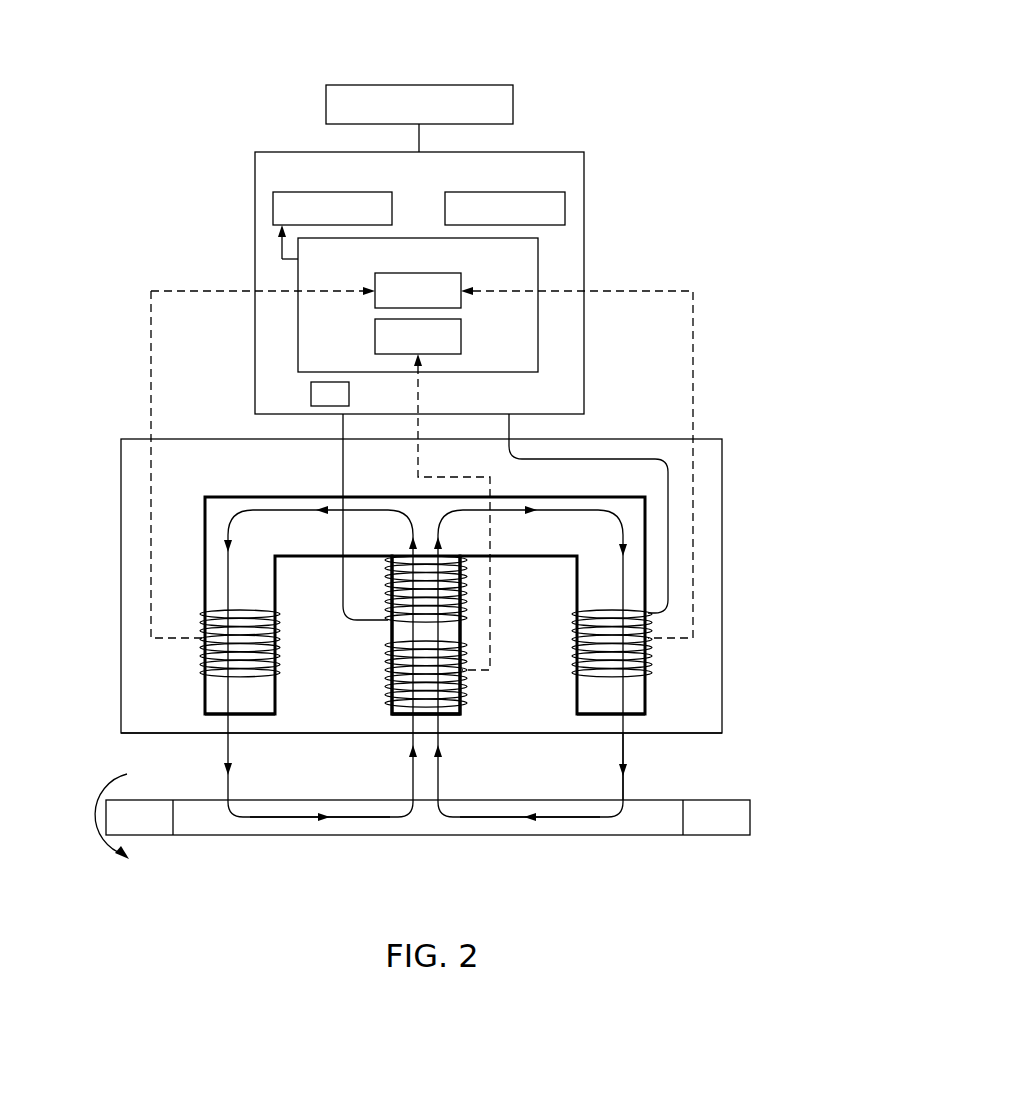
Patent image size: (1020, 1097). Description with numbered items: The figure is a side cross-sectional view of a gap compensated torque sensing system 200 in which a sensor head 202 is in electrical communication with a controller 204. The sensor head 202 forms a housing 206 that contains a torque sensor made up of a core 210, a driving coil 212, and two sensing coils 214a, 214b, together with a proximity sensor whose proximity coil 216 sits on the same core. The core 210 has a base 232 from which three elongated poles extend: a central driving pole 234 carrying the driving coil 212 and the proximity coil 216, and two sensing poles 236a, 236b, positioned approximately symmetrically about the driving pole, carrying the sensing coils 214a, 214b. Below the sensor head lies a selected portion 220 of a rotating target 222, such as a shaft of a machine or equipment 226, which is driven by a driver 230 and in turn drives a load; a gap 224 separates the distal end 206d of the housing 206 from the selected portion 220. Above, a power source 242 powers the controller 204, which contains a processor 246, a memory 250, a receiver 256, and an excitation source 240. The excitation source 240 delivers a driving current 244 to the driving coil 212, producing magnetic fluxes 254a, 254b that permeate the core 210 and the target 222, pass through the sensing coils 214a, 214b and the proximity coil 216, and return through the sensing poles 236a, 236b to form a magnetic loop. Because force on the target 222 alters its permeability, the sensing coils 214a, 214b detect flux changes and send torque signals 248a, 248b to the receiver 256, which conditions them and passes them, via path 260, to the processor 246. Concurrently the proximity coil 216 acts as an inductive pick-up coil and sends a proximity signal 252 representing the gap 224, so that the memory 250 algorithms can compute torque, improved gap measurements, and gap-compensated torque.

The gap compensated torque sensing system 200 is at (485, 47).
The sensor head 202 is at (110, 481).
The controller 204 is at (585, 168).
The housing 206 is at (722, 568).
The distal end of the housing 206d is at (730, 731).
The core 210 is at (538, 492).
The driving coil 212 is at (392, 628).
The first sensing coil 214a is at (201, 666).
The second sensing coil 214b is at (652, 664).
The proximity coil 216 is at (385, 670).
The selected portion of the target 220 is at (428, 826).
The target 222 is at (571, 800).
The gap 224 is at (642, 770).
The machine or equipment 226 is at (75, 794).
The driver 230 is at (152, 838).
The base 232 is at (270, 545).
The driving pole 234 is at (450, 717).
The first sensing pole 236a is at (207, 720).
The second sensing pole 236b is at (646, 714).
The excitation source 240 is at (311, 392).
The power source 242 is at (513, 104).
The driving current 244 is at (344, 577).
The processor 246 is at (273, 201).
The first torque signal 248a is at (162, 290).
The second torque signal 248b is at (655, 289).
The memory 250 is at (565, 208).
The proximity signal 252 is at (421, 462).
The first magnetic flux 254a is at (280, 813).
The second magnetic flux 254b is at (477, 813).
The receiver 256 is at (298, 335).
The transmission of conditioned signals to processor 260 is at (282, 253).